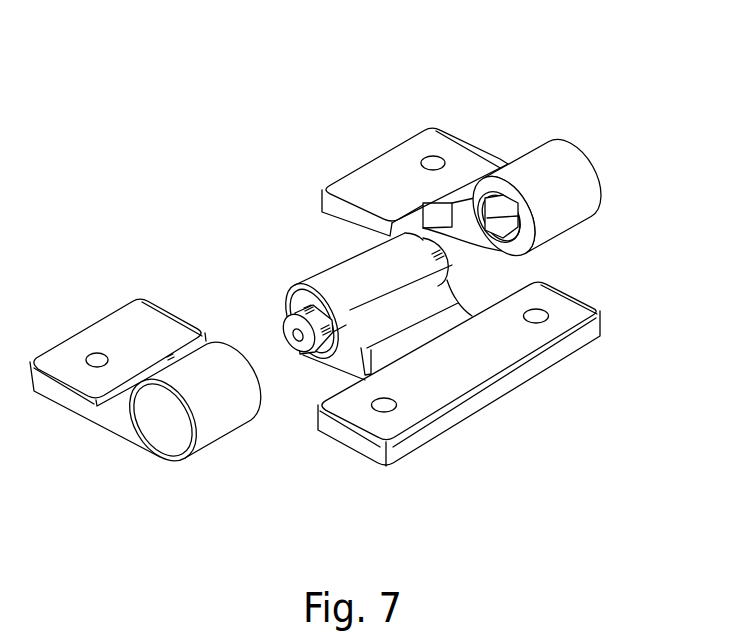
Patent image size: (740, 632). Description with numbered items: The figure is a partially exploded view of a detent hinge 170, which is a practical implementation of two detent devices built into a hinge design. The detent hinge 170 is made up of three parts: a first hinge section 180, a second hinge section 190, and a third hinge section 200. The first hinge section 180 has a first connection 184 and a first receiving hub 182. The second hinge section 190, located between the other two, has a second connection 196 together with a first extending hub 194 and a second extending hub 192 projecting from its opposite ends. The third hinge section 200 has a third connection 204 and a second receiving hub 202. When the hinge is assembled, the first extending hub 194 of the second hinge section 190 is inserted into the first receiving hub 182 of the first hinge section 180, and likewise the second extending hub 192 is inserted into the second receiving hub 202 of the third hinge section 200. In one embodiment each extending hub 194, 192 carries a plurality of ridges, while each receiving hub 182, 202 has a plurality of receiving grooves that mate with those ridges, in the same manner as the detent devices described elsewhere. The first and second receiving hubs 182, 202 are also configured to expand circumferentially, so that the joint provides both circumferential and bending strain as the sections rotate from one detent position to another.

The detent hinge 170 is at (349, 79).
The first hinge section 180 is at (540, 171).
The first receiving hub 182 is at (502, 230).
The first connection 184 is at (372, 190).
The second hinge section 190 is at (453, 359).
The second extending hub 192 is at (286, 311).
The first extending hub 194 is at (445, 264).
The second connection 196 is at (412, 403).
The third hinge section 200 is at (183, 421).
The second receiving hub 202 is at (259, 353).
The third connection 204 is at (103, 330).